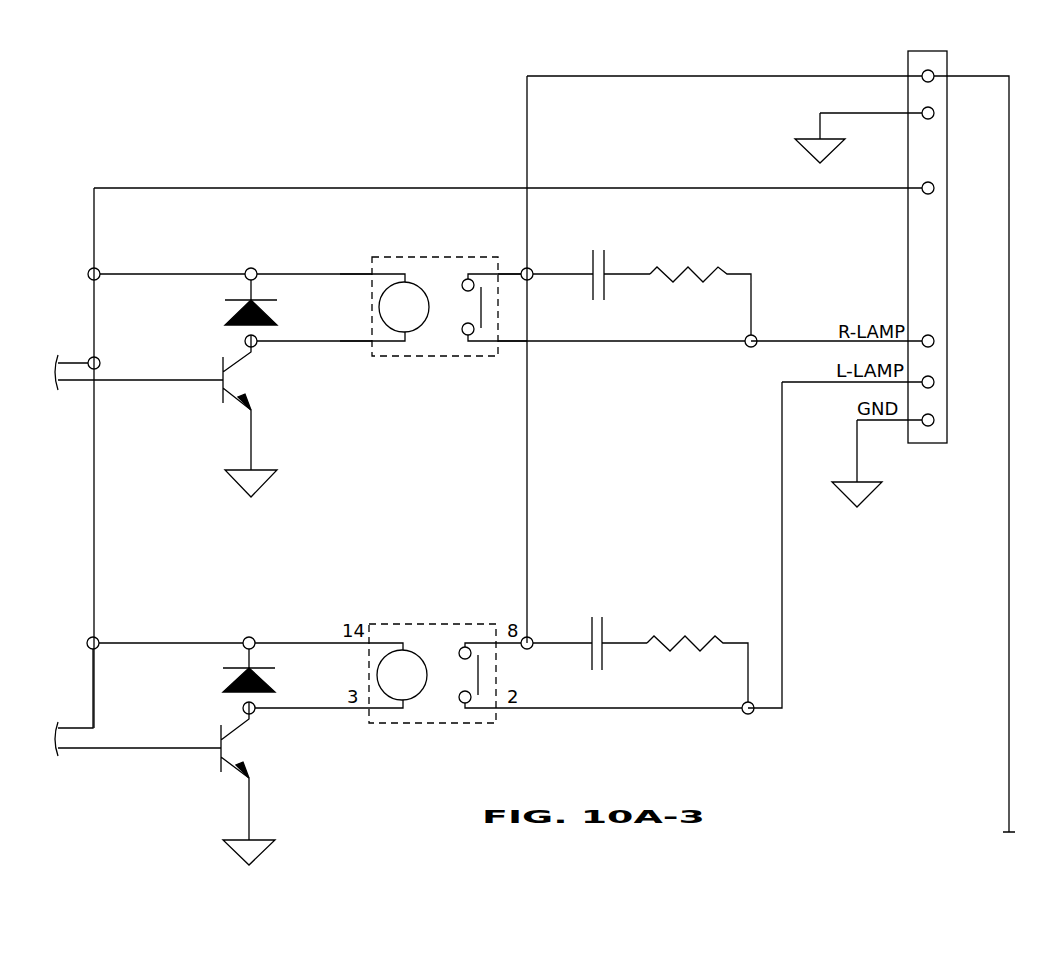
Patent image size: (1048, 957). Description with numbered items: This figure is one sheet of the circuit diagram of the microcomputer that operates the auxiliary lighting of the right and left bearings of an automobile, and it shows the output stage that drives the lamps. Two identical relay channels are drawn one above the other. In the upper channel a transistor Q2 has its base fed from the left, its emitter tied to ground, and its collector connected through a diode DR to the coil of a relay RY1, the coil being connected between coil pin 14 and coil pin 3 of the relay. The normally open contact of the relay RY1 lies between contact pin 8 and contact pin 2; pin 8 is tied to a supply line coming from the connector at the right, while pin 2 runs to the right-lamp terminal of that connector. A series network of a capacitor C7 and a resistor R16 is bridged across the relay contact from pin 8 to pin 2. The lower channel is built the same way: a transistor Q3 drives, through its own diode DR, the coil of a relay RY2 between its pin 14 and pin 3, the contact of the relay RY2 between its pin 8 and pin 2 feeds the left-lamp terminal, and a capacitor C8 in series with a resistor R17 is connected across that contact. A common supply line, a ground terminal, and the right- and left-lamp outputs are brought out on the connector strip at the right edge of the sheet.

The relay RY1 is at (507, 308).
The relay RY2 is at (504, 676).
The capacitor C7 105/250V C7 is at (597, 252).
The capacitor C8 105/250V C8 is at (595, 621).
The resistor R16 4.7K TW R16 is at (700, 290).
The resistor R17 4.7K TW R17 is at (697, 656).
The transistor Q2 KSR1001 Q2 is at (280, 422).
The transistor Q3 KSR1001 Q3 is at (279, 789).
The diode DR is at (233, 491).
The relay coil pin 14 is at (356, 263).
The relay coil pin 3 is at (356, 329).
The relay contact pin 8 is at (509, 263).
The relay contact pin 2 is at (512, 329).